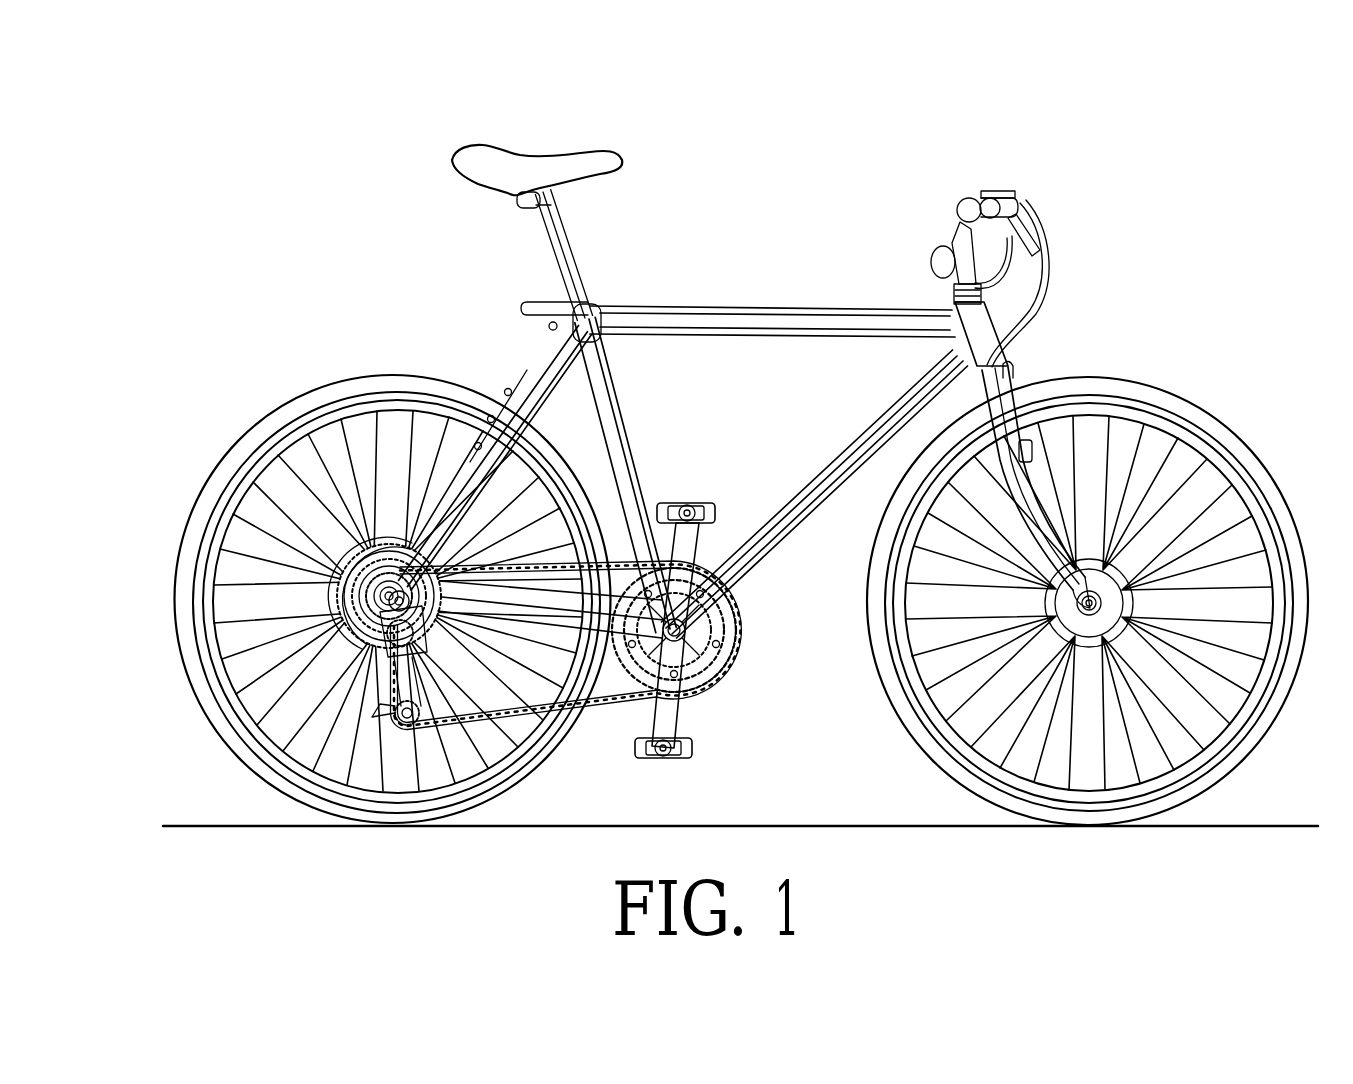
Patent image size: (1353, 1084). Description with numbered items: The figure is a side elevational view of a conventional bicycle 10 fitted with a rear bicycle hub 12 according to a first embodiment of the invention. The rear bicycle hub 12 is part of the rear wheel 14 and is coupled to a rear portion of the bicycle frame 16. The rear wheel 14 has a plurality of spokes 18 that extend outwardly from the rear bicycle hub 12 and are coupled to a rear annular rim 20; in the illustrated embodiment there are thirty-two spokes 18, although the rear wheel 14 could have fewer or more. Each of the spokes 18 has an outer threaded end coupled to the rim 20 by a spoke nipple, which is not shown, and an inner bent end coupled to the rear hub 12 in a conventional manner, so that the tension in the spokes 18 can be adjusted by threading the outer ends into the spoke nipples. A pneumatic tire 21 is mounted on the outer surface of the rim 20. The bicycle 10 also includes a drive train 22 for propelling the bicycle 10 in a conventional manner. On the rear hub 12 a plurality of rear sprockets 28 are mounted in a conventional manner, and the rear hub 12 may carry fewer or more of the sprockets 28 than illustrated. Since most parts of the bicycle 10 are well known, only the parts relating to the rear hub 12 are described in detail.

The bicycle 10 is at (1044, 160).
The rear bicycle hub 12 is at (304, 598).
The rear wheel 14 is at (262, 405).
The bicycle frame 16 is at (641, 436).
The spokes 18 is at (330, 448).
The rear annular rim 20 is at (366, 396).
The pneumatic tire 21 is at (423, 375).
The drive train 22 is at (752, 676).
The rear sprockets 28 is at (325, 483).